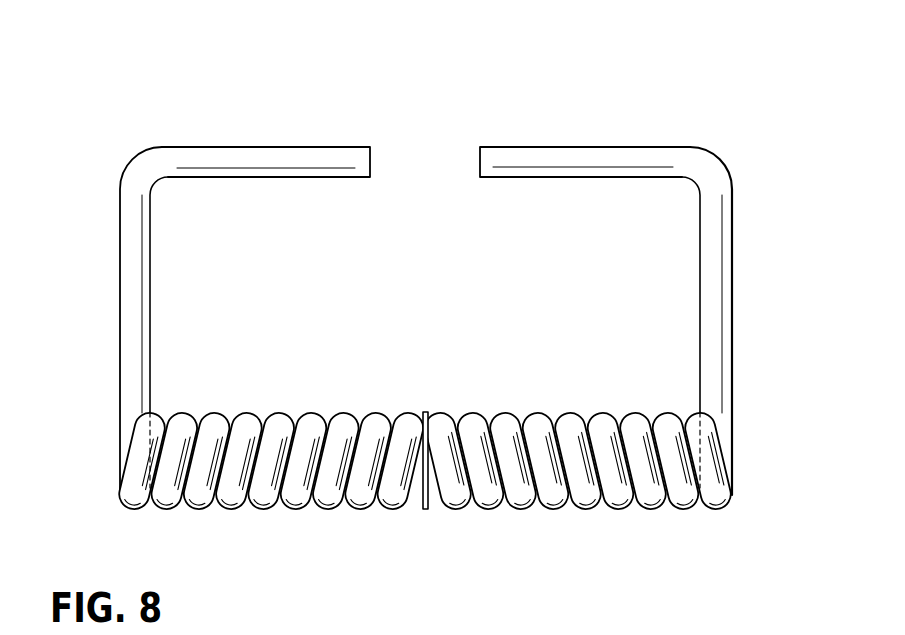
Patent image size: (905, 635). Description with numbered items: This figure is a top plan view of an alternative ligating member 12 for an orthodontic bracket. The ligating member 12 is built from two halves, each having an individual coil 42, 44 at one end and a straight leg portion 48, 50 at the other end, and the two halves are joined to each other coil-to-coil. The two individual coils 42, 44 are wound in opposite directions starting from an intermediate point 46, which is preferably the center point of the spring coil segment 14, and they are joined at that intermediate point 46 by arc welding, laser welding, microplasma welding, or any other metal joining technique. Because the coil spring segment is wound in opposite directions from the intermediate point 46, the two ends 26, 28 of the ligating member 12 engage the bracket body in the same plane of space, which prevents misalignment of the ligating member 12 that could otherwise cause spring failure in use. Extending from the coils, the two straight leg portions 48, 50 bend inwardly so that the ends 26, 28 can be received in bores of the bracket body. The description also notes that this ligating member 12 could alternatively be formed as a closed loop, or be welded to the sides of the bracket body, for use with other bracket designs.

The ligating member 12 is at (666, 63).
The spring coil segment 14 is at (425, 471).
The end 26 is at (371, 161).
The end 28 is at (480, 161).
The individual coil 42 is at (256, 410).
The individual coil 44 is at (568, 410).
The intermediate point 46 is at (426, 512).
The straight leg portion 48 is at (121, 336).
The straight leg portion 50 is at (733, 292).